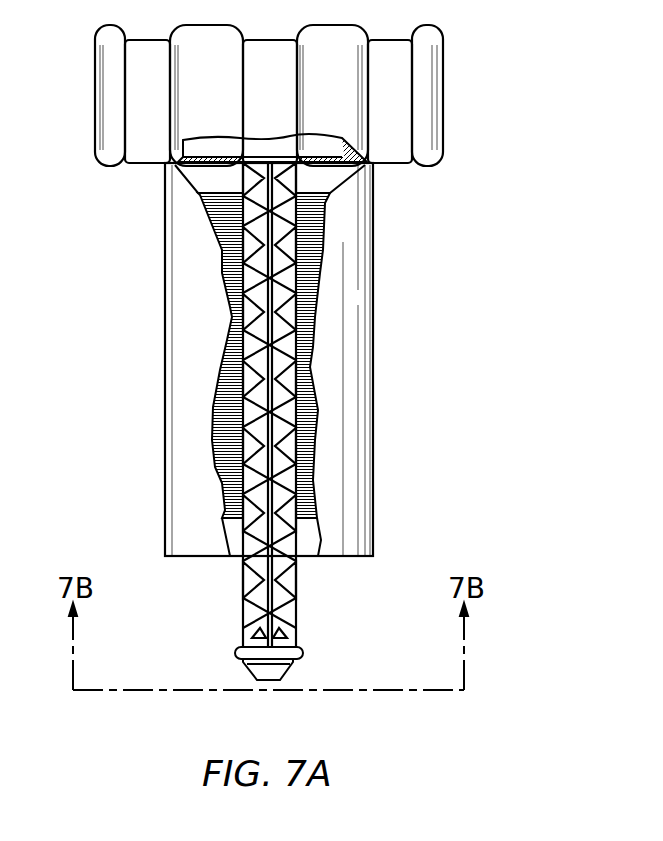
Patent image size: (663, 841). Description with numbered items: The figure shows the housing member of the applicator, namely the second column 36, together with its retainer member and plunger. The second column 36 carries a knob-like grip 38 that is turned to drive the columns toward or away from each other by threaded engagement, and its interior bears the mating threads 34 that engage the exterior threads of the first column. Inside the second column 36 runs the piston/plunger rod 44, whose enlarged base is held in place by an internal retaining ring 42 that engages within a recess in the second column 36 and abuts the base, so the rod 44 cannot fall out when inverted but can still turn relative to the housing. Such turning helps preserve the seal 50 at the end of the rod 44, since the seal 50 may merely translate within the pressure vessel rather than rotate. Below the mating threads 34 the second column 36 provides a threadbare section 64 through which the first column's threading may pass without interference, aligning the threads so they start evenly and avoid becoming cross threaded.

The mating threads 34 is at (227, 450).
The second column 36 is at (134, 286).
The knob-like grip 38 is at (445, 73).
The internal retaining ring 42 is at (335, 168).
The piston/plunger rod 44 is at (300, 345).
The seal 50 is at (300, 653).
The threadbare section 64 is at (307, 538).